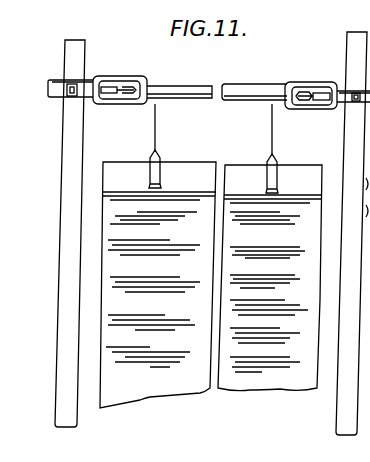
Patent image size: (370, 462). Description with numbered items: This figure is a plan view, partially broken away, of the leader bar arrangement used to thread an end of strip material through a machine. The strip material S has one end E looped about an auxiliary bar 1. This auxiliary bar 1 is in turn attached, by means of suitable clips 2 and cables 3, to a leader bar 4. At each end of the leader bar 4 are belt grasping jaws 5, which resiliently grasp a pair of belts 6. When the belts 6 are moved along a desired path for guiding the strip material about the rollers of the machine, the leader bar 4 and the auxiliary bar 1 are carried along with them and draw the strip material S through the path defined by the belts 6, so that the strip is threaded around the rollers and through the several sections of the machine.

The auxiliary bar 1 is at (204, 172).
The clips 2 is at (150, 170).
The cables 3 is at (156, 125).
The leader bar 4 is at (245, 84).
The belt grasping jaws 5 is at (95, 77).
The belts 6 is at (77, 42).
The end of strip material E is at (305, 172).
The strip material S is at (269, 292).